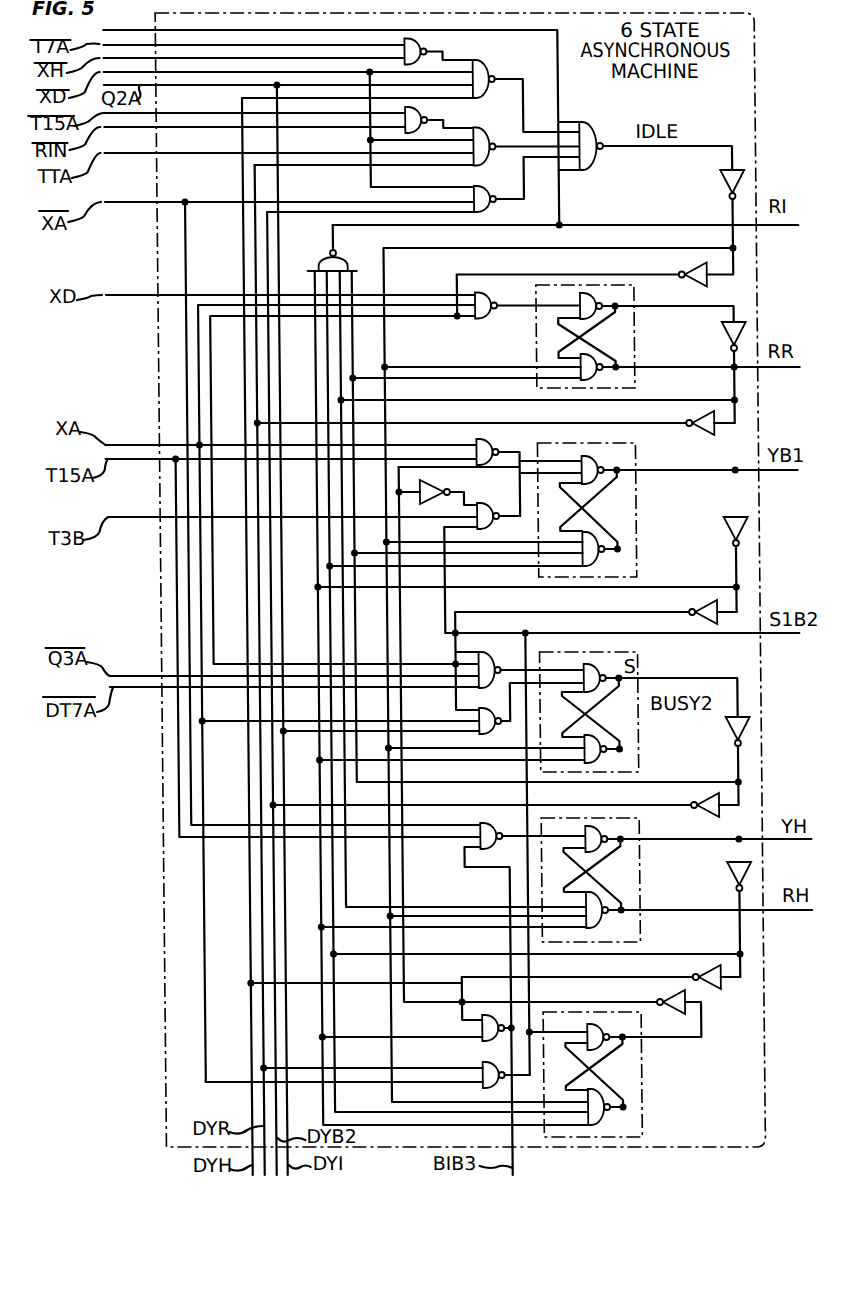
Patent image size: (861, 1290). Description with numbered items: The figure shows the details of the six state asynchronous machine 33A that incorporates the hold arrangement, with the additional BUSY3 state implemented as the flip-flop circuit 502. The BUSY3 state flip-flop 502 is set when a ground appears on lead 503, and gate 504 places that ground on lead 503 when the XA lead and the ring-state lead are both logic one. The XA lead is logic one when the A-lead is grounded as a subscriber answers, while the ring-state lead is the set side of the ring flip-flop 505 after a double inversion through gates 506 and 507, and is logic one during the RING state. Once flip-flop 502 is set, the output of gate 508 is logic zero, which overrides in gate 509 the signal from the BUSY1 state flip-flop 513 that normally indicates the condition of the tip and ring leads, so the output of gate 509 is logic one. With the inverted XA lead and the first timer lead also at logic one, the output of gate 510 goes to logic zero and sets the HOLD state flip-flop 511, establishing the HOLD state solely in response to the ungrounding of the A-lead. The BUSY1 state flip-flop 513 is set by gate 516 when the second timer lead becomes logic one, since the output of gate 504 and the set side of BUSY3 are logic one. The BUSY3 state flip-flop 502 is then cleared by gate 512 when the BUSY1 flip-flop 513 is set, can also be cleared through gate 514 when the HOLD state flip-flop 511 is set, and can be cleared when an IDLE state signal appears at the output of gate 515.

The six state asynchronous machine 33A is at (754, 47).
The gate 515 is at (722, 178).
The ring flip-flop 505 is at (636, 349).
The gate 506 is at (726, 330).
The gate 507 is at (703, 427).
The gate 516 is at (490, 499).
The BUSY1 state flip-flop 513 is at (636, 539).
The gate 512 is at (726, 534).
The gate 510 is at (492, 848).
The HOLD state flip-flop 511 is at (636, 935).
The gate 514 is at (728, 866).
The gate 509 is at (500, 1012).
The gate 508 is at (656, 991).
The lead 503 is at (498, 1062).
The gate 504 is at (480, 1086).
The BUSY3 state flip-flop 502 is at (638, 1117).